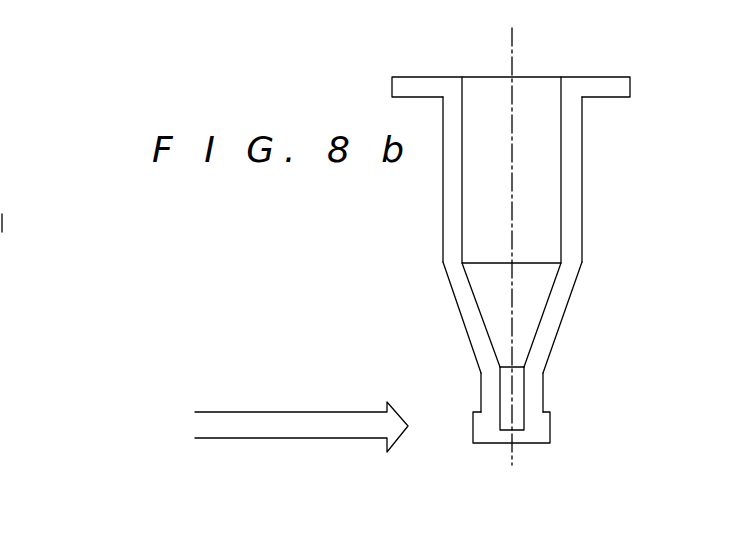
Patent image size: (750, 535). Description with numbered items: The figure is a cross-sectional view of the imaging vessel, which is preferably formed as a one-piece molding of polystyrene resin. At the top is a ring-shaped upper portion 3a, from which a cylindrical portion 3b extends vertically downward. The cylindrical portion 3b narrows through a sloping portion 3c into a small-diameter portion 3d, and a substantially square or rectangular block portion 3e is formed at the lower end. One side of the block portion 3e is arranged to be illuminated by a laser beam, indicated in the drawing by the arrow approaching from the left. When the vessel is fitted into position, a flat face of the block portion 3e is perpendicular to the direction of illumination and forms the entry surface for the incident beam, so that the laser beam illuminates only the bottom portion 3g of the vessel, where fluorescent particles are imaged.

The ring-shaped upper portion 3a is at (607, 89).
The cylindrical portion 3b is at (572, 198).
The sloping portion 3c is at (553, 320).
The small-diameter portion 3d is at (537, 400).
The block portion 3e is at (533, 437).
The bottom portion 3g is at (507, 424).